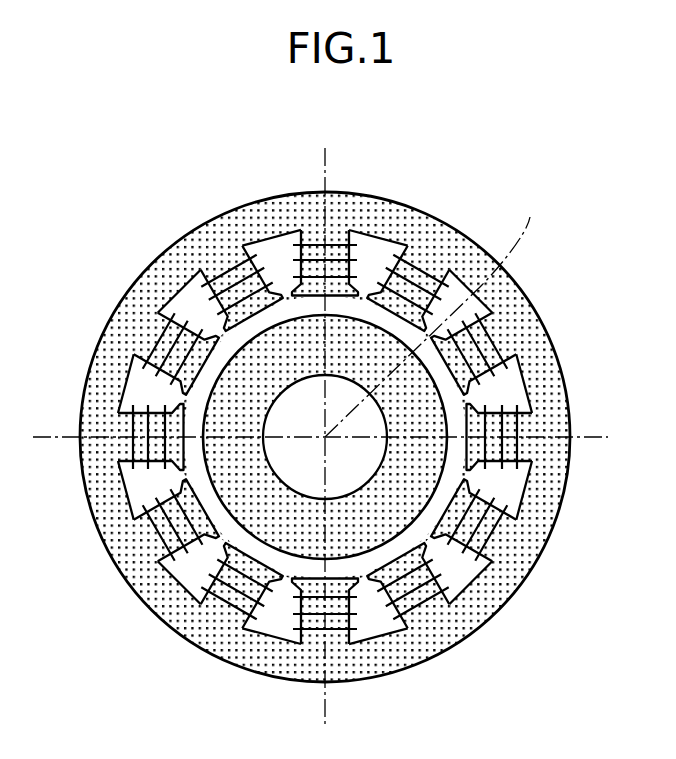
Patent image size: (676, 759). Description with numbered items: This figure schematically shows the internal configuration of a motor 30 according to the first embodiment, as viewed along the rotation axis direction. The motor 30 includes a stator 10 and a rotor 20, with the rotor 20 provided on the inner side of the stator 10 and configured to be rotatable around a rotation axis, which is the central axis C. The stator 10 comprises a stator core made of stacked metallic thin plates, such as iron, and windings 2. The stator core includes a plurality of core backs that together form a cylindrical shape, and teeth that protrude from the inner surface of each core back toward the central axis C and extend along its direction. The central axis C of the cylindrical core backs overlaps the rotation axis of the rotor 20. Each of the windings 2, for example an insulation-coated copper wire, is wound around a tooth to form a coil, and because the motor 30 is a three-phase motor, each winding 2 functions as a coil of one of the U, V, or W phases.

The motor 30 is at (467, 172).
The stator 10 is at (367, 467).
The rotor 20 is at (325, 354).
The winding 2 is at (370, 472).
The central axis C is at (320, 438).